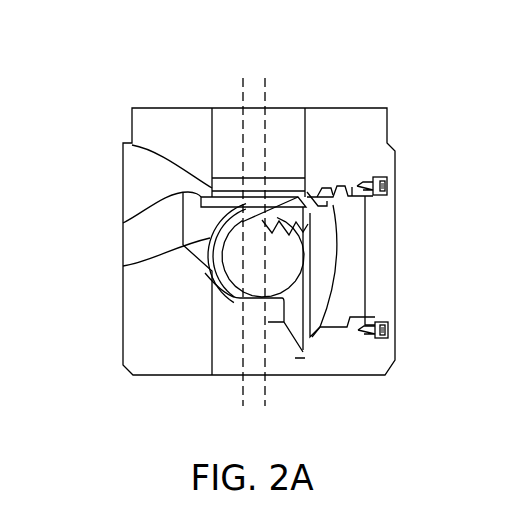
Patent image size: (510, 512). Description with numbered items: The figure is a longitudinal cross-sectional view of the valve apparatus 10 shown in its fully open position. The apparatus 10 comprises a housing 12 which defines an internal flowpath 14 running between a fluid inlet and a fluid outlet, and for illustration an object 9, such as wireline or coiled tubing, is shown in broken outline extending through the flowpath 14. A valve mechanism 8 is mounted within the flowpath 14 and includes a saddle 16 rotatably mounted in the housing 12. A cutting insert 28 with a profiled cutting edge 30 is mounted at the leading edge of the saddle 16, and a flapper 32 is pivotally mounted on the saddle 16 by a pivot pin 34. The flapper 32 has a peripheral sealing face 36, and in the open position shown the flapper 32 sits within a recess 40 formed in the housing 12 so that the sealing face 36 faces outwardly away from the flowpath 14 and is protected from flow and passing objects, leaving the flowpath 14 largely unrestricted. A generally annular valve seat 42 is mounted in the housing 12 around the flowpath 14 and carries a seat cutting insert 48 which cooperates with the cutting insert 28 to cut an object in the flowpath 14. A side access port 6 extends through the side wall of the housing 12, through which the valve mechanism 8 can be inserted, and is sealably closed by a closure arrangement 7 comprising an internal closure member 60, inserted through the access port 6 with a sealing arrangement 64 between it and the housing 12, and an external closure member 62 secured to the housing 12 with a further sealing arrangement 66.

The side access port 6 is at (384, 350).
The closure arrangement 7 is at (387, 210).
The valve mechanism 8 is at (226, 264).
The object 9 is at (266, 84).
The apparatus 10 is at (134, 56).
The housing 12 is at (147, 115).
The internal flowpath 14 is at (220, 123).
The saddle 16 is at (124, 266).
The cutting insert 28 is at (318, 197).
The profiled cutting edge 30 is at (304, 160).
The flapper 32 is at (325, 270).
The pivot pin 34 is at (310, 228).
The peripheral sealing face 36 is at (306, 335).
The recess 40 is at (318, 331).
The valve seat 42 is at (134, 146).
The seat cutting insert 48 is at (125, 219).
The internal closure member 60 is at (377, 308).
The external closure member 62 is at (387, 299).
The sealing arrangement 64 is at (352, 192).
The sealing arrangement 66 is at (387, 190).